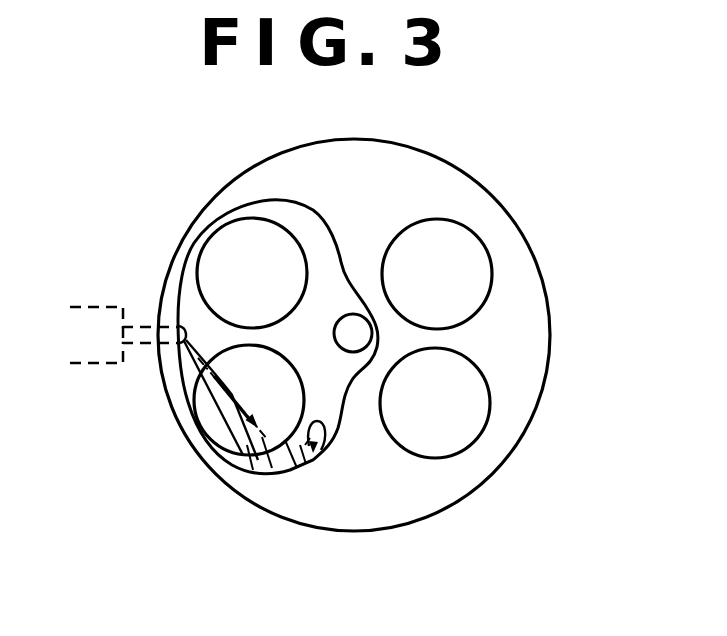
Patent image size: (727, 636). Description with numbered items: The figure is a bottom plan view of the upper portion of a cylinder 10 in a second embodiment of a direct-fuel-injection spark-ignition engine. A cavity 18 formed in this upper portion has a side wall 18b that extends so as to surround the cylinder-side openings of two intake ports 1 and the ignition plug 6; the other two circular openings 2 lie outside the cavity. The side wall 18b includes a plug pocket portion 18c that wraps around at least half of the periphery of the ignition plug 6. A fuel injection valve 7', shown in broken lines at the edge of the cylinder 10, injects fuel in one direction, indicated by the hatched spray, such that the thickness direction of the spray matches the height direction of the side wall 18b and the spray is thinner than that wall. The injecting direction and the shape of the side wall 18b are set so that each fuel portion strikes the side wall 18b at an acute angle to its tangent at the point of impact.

The intake port 1 is at (245, 247).
The reagent container 2 is at (458, 262).
The ignition plug 6 is at (353, 322).
The fuel injection valve 7' is at (124, 274).
The cylinder 10 is at (551, 345).
The cavity 18 is at (196, 370).
The side wall 18b is at (328, 434).
The plug pocket portion 18c is at (355, 365).